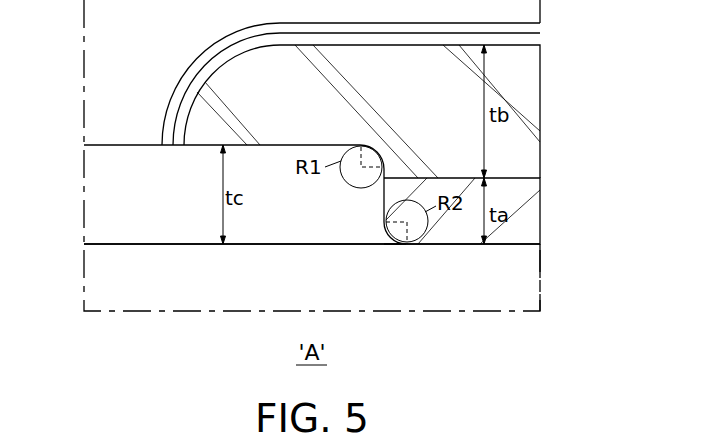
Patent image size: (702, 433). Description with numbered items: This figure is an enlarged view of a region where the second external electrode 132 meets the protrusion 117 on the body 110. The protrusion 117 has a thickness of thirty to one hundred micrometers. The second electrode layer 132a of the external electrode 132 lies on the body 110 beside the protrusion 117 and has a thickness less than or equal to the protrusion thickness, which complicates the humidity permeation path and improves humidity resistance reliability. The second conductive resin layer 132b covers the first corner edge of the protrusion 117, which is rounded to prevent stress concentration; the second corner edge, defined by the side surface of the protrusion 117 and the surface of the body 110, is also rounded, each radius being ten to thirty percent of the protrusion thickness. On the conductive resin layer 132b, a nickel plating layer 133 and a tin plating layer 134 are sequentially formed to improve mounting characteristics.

The body 110 is at (527, 283).
The protrusion 117 is at (97, 193).
The second external electrode 132 is at (443, 144).
The second electrode layer 132a is at (527, 208).
The second conductive resin layer 132b is at (527, 115).
The nickel plating layer 133 is at (527, 44).
The tin plating layer 134 is at (527, 26).